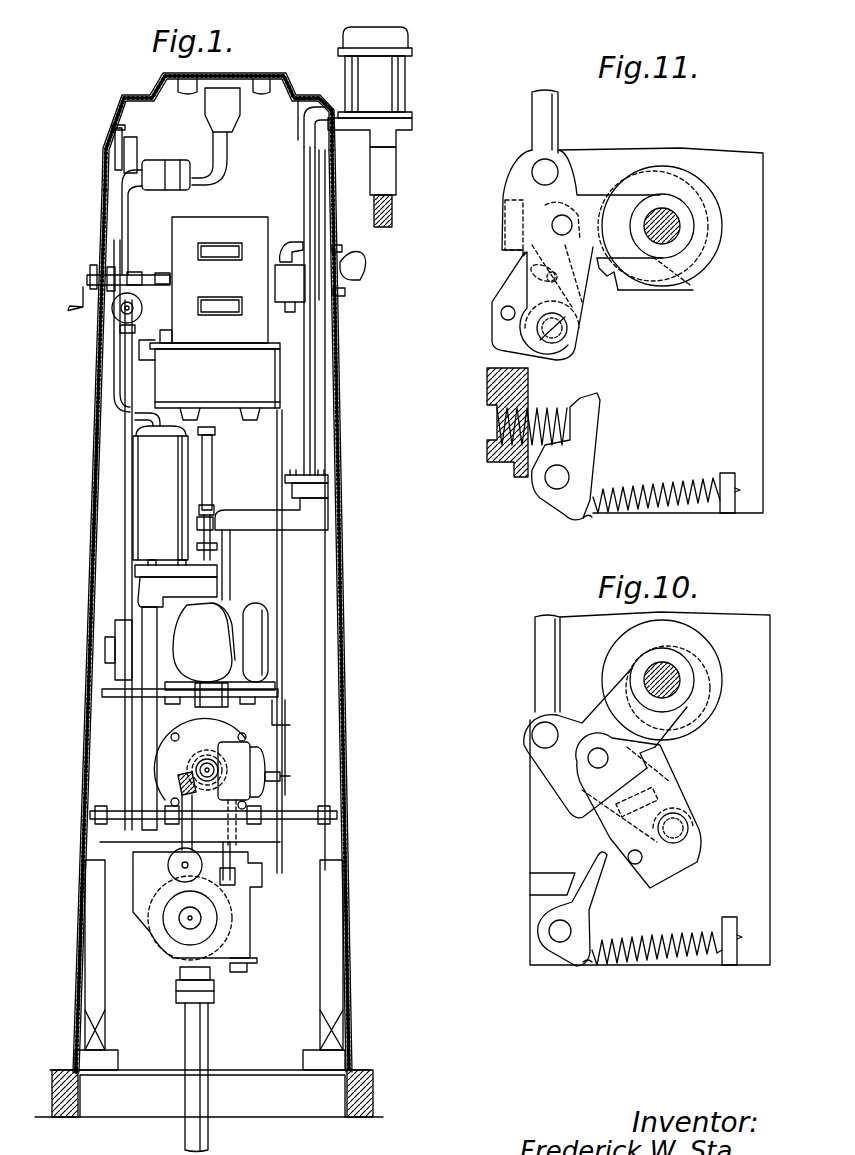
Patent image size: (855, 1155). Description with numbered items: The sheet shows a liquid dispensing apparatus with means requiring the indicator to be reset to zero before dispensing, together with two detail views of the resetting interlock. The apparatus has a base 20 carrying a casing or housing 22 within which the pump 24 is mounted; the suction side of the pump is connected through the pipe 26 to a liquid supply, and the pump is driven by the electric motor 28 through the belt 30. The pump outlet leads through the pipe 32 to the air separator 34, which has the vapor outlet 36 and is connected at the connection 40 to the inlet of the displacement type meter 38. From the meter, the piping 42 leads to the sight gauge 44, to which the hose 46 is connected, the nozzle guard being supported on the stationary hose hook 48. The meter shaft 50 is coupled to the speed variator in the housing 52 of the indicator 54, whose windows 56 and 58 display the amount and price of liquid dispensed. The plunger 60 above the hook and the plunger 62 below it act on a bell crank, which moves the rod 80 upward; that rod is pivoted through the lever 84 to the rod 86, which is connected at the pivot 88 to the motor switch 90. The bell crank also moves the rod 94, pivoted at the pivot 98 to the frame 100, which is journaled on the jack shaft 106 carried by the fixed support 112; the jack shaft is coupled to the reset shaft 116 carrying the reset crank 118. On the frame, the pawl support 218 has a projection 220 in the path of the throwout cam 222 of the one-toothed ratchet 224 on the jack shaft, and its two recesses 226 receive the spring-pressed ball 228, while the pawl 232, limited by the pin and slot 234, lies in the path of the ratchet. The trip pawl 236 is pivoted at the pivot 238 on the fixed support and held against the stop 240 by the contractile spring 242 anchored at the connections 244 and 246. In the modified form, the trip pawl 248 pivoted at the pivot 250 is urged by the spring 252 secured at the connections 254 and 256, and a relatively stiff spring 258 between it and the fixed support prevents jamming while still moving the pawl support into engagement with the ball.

In FIG. 1, the base 20 is at (370, 1075).
In FIG. 1, the casing or housing 22 is at (352, 900).
In FIG. 1, the pump 24 is at (245, 922).
In FIG. 1, the pipe 26 is at (215, 1040).
In FIG. 1, the electric motor 28 is at (170, 762).
In FIG. 1, the belt 30 is at (128, 845).
In FIG. 1, the pipe 32 is at (148, 722).
In FIG. 1, the air separator 34 is at (148, 490).
In FIG. 1, the vapor outlet 36 is at (114, 375).
In FIG. 1, the meter 38 is at (258, 650).
In FIG. 1, the connection to meter inlet 40 is at (150, 573).
In FIG. 1, the piping 42 is at (318, 512).
In FIG. 1, the sight gauge 44 is at (408, 80).
In FIG. 1, the hose 46 is at (393, 207).
In FIG. 1, the hose hook 48 is at (366, 268).
In FIG. 1, the meter shaft 50 is at (214, 460).
In FIG. 1, the housing 52 is at (265, 383).
In FIG. 1, the indicator 54 is at (262, 326).
In FIG. 1, the window 56 is at (220, 292).
In FIG. 1, the window 58 is at (222, 248).
In FIG. 1, the plunger 60 is at (342, 247).
In FIG. 1, the plunger 62 is at (345, 291).
In FIG. 1, the rod 80 is at (284, 590).
In FIG. 1, the lever 84 is at (280, 705).
In FIG. 1, the rod 86 is at (288, 750).
In FIG. 1, the pivot 88 is at (290, 777).
In FIG. 1, the motor switch 90 is at (245, 790).
In FIG. 11, the rod 94 is at (533, 118).
In FIG. 10, the rod 94 is at (533, 643).
In FIG. 10, the pivot 98 is at (538, 732).
In FIG. 11, the frame 100 is at (565, 178).
In FIG. 10, the frame 100 is at (550, 757).
In FIG. 11, the jack shaft 106 is at (675, 224).
In FIG. 10, the jack shaft 106 is at (675, 678).
In FIG. 11, the fixed support 112 is at (706, 158).
In FIG. 10, the fixed support 112 is at (733, 613).
In FIG. 1, the reset shaft 116 is at (158, 272).
In FIG. 1, the reset crank 118 is at (80, 292).
In FIG. 11, the pawl support 218 is at (492, 338).
In FIG. 10, the pawl support 218 is at (670, 865).
In FIG. 11, the extension or projection 220 is at (619, 286).
In FIG. 10, the extension or projection 220 is at (660, 752).
In FIG. 11, the throwout cam 222 is at (674, 226).
In FIG. 10, the throwout cam 222 is at (679, 680).
In FIG. 11, the one-toothed ratchet 224 is at (656, 286).
In FIG. 10, the one-toothed ratchet 224 is at (672, 735).
In FIG. 11, the indentations or recesses 226 is at (505, 305).
In FIG. 10, the indentations or recesses 226 is at (628, 855).
In FIG. 11, the spring-pressed ball 228 is at (568, 330).
In FIG. 10, the spring-pressed ball 228 is at (690, 815).
In FIG. 11, the pawl 232 is at (540, 222).
In FIG. 10, the pawl 232 is at (548, 792).
In FIG. 11, the pin and slot 234 is at (540, 241).
In FIG. 10, the pin and slot 234 is at (660, 782).
In FIG. 10, the trip pawl 236 is at (590, 903).
In FIG. 10, the pivot 238 is at (562, 931).
In FIG. 10, the stop 240 is at (545, 885).
In FIG. 10, the contractile spring 242 is at (657, 965).
In FIG. 10, the spring connection 244 is at (580, 966).
In FIG. 10, the spring connection 246 is at (730, 967).
In FIG. 11, the trip pawl 248 is at (597, 438).
In FIG. 11, the pivot 250 is at (550, 482).
In FIG. 11, the spring 252 is at (656, 508).
In FIG. 11, the spring connection 254 is at (585, 520).
In FIG. 11, the spring connection 256 is at (733, 513).
In FIG. 11, the stiff spring 258 is at (550, 410).